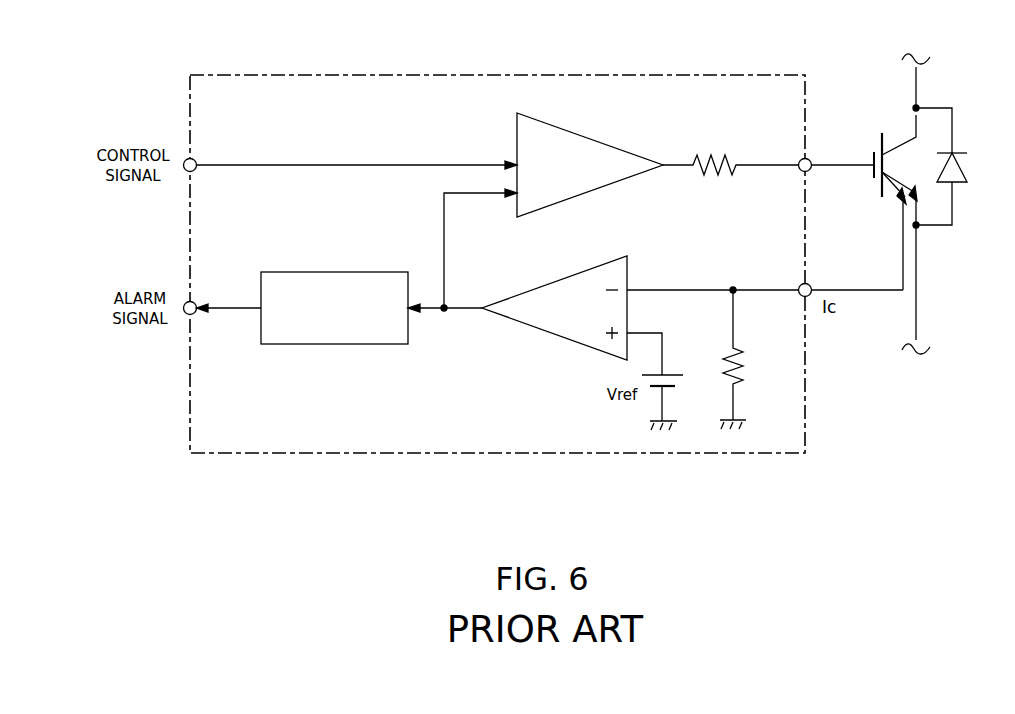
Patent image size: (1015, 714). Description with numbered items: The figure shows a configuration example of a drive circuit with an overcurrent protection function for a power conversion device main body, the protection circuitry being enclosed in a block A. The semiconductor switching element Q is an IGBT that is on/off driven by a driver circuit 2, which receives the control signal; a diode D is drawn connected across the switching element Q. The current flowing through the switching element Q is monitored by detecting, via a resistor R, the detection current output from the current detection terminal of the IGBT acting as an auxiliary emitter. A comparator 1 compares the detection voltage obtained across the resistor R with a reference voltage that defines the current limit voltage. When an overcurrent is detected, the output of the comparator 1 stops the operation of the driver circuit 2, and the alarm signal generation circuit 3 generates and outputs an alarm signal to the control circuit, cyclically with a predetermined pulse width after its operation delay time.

The comparator 1 is at (535, 306).
The driver circuit 2 is at (594, 140).
The alarm signal generation circuit 3 is at (325, 344).
The control IC block A is at (696, 75).
The semiconductor switching element Q is at (890, 227).
The freewheeling diode D is at (950, 166).
The resistor R is at (741, 359).